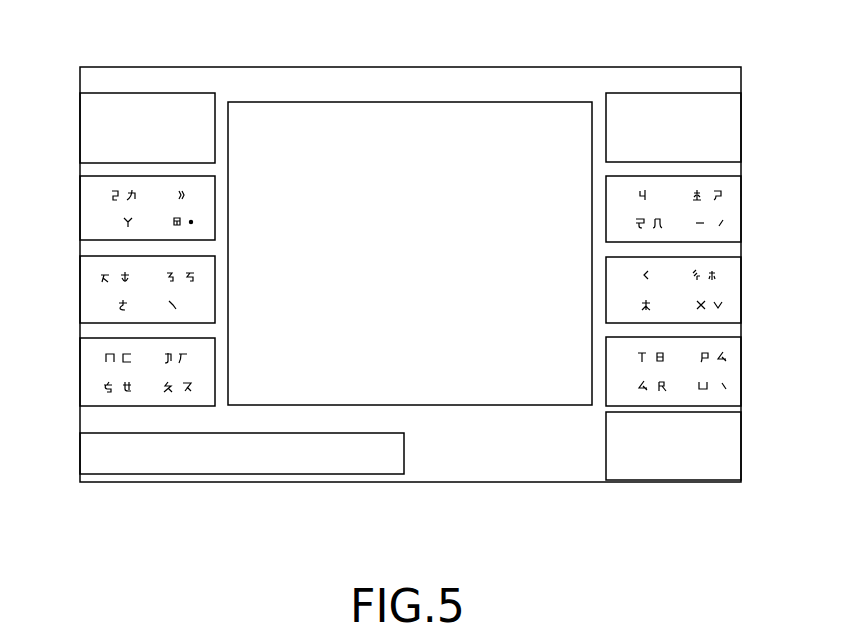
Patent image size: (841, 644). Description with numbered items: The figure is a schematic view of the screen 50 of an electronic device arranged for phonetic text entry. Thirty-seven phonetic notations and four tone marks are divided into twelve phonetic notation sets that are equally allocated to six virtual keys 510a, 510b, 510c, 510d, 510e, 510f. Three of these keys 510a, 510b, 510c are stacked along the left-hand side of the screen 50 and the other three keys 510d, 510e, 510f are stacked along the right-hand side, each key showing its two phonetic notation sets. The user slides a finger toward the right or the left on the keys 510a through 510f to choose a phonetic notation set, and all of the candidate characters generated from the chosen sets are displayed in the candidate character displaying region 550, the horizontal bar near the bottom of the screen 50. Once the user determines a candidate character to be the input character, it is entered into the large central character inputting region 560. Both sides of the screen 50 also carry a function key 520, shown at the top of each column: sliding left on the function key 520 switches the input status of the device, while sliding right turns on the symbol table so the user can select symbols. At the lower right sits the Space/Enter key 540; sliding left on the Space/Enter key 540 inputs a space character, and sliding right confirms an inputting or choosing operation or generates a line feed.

The screen 50 is at (475, 482).
The virtual key 510a is at (93, 215).
The virtual key 510b is at (93, 302).
The virtual key 510c is at (93, 390).
The virtual key 510d is at (728, 230).
The virtual key 510e is at (728, 310).
The virtual key 510f is at (728, 374).
The function key 520 is at (93, 143).
The Space/Enter key 540 is at (728, 468).
The candidate character displaying region 550 is at (236, 455).
The character inputting region 560 is at (313, 132).